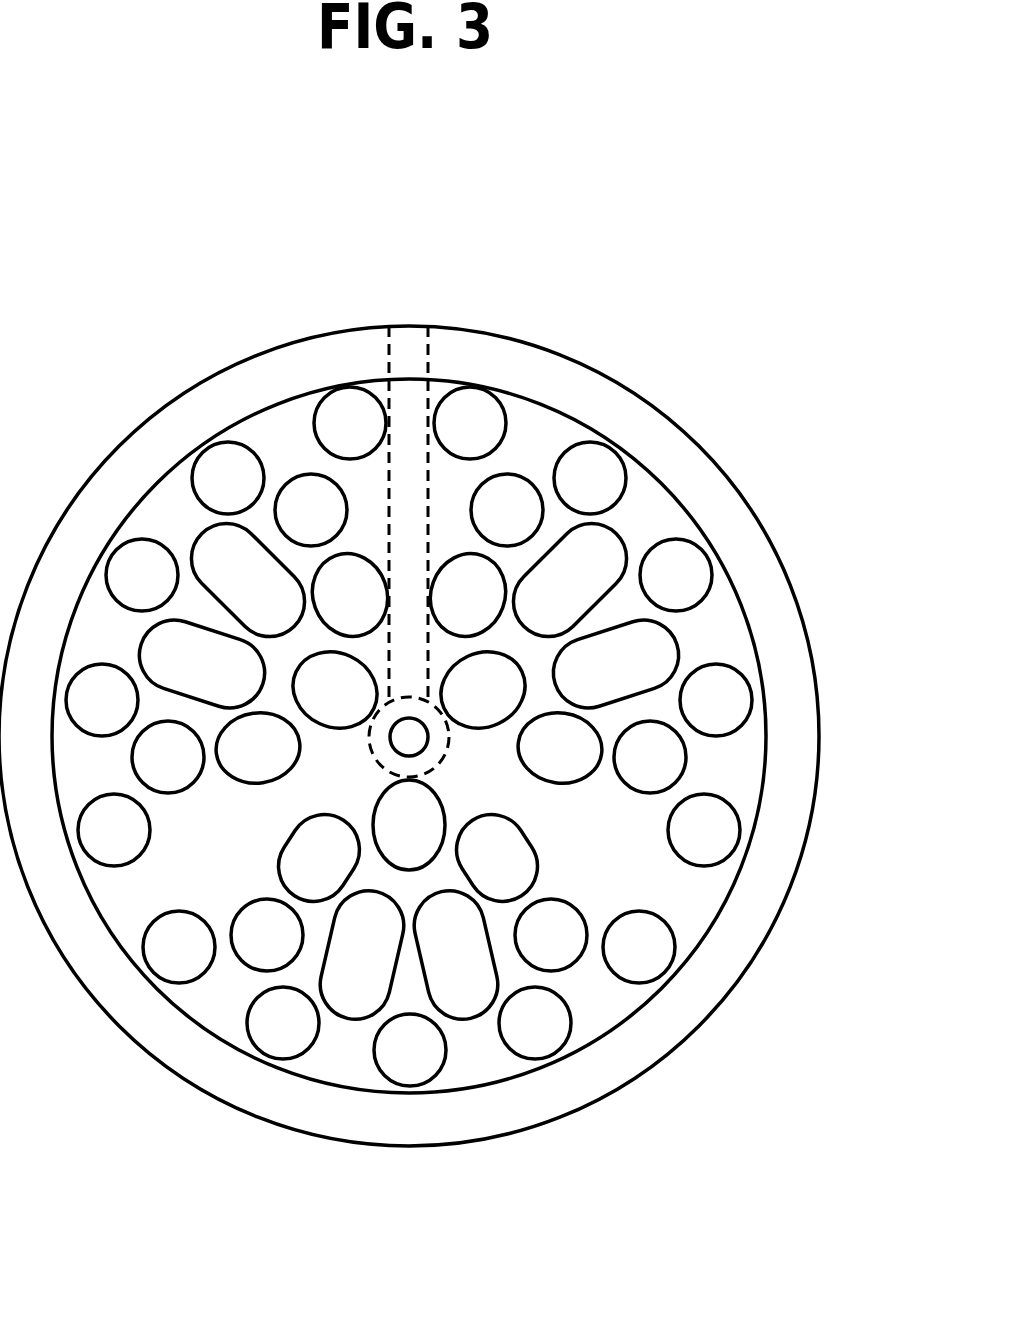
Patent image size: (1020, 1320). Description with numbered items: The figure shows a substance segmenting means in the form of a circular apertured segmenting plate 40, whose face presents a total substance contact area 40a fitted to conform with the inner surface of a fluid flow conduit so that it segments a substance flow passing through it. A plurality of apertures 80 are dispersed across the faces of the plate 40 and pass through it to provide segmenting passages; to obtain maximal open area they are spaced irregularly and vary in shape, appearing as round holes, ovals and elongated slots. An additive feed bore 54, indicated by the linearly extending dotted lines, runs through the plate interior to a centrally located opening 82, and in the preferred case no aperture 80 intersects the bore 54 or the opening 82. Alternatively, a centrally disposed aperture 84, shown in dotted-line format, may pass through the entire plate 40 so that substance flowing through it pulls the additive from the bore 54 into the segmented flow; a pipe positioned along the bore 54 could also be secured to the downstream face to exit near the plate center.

The apertured segmenting plate 40 is at (723, 475).
The total substance contact area 40a is at (635, 460).
The additive feed bore 54 is at (417, 400).
The apertures 80 is at (660, 645).
The opening 82 is at (415, 735).
The centrally disposed aperture 84 is at (373, 753).